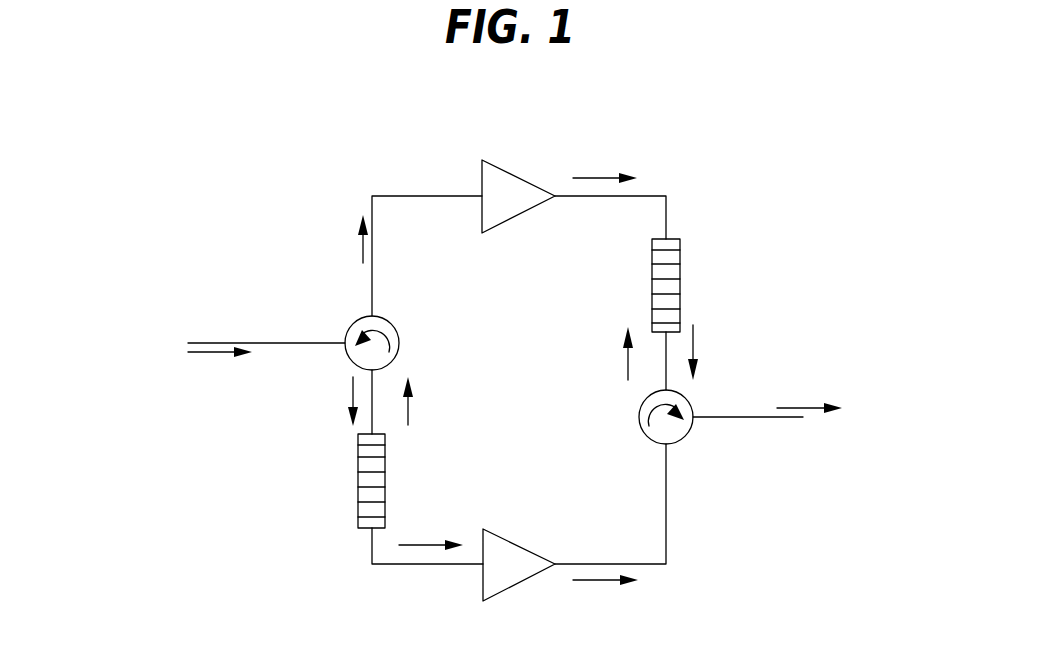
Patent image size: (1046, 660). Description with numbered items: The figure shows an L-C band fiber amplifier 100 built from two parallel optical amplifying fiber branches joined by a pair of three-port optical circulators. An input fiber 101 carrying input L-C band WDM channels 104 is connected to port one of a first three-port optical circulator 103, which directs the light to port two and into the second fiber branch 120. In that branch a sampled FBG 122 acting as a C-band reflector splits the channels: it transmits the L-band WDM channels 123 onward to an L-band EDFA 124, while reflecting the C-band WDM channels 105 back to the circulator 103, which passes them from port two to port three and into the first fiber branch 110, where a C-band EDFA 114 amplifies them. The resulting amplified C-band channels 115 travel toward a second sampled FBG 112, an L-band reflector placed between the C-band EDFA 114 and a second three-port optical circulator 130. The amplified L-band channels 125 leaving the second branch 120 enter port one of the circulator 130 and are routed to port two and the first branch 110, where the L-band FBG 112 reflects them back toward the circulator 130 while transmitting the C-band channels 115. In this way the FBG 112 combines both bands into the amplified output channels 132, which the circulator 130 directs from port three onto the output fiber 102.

The L-C band fiber amplifier 100 is at (206, 213).
The input fiber 101 is at (283, 342).
The output fiber 102 is at (780, 420).
The first 3-port optical circulator 103 is at (396, 325).
The input L-C band WDM channels 104 is at (218, 355).
The C-band WDM channels 105 is at (361, 251).
The first fiber branch 110 is at (436, 160).
The sampled FBG (L-band reflector) 112 is at (681, 256).
The C-band EDFA 114 is at (508, 222).
The amplified C-band channels 115 is at (600, 177).
The second fiber branch 120 is at (417, 581).
The sampled FBG (C-band reflector) 122 is at (356, 483).
The L-band WDM channels 123 is at (425, 545).
The L-band EDFA 124 is at (518, 540).
The amplified L-band channels 125 is at (627, 362).
The second 3-port optical circulator 130 is at (690, 437).
The amplified output channels 132 is at (695, 343).